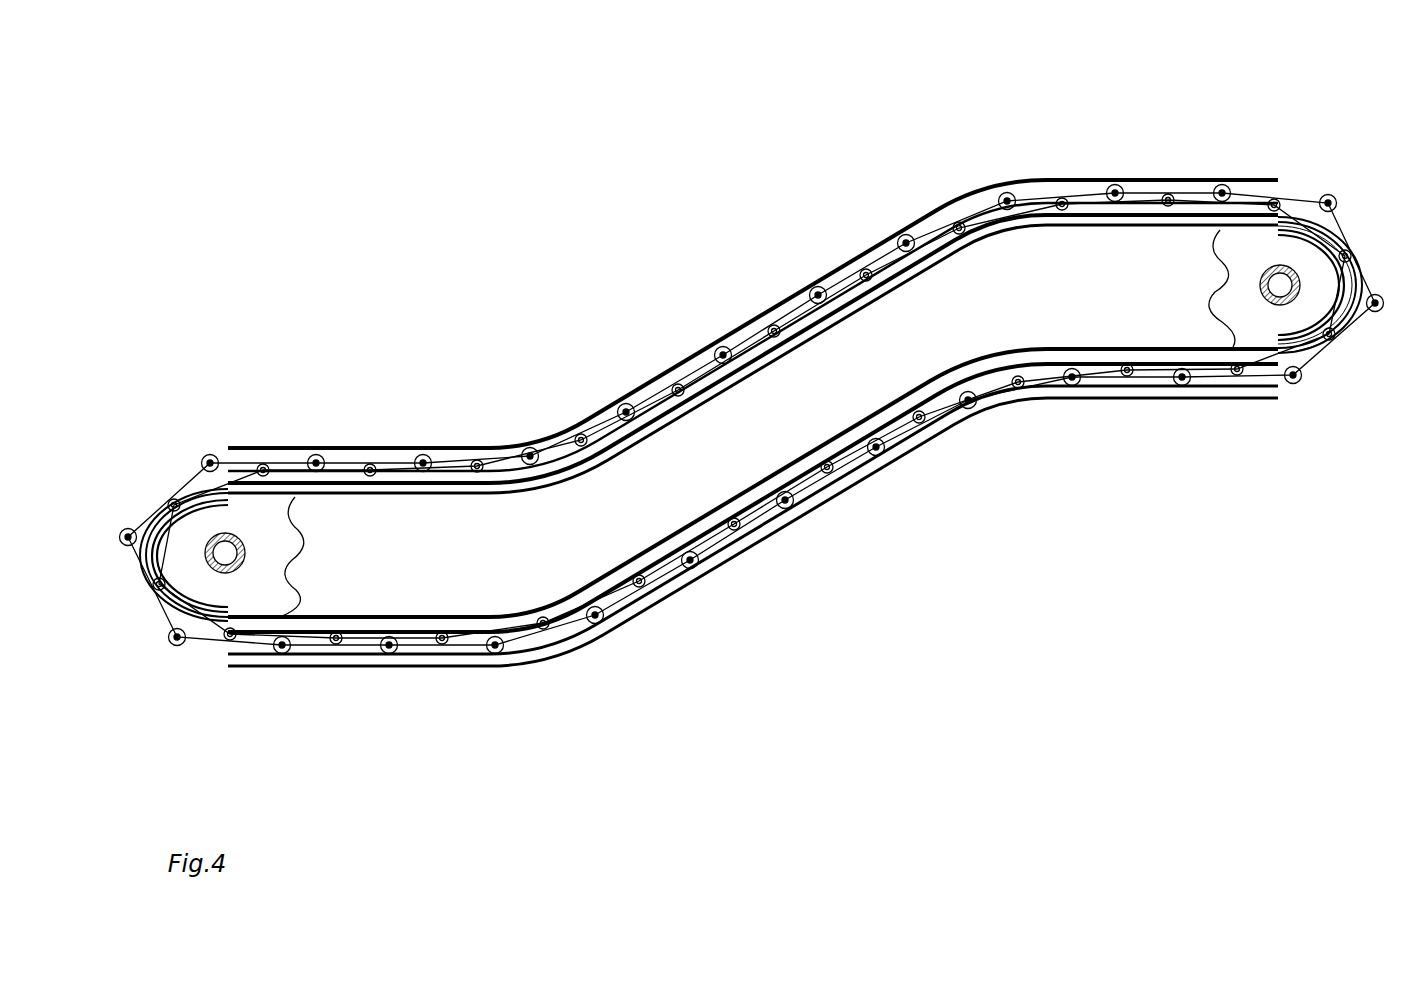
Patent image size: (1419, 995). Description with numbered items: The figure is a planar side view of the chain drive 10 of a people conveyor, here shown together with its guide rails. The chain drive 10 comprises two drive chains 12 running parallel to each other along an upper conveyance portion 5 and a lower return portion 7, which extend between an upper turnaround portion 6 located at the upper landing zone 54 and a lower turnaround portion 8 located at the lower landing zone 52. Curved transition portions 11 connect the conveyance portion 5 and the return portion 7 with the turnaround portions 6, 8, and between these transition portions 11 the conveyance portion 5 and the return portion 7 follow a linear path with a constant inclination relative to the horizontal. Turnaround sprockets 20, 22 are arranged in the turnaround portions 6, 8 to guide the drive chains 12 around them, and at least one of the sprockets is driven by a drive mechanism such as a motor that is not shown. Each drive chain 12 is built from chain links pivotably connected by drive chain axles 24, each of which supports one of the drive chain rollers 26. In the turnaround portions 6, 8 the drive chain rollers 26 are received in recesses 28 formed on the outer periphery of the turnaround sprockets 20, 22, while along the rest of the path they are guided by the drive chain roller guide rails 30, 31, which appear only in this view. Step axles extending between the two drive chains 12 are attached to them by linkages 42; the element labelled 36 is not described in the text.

The conveyance portion 5 is at (838, 537).
The upper turnaround portion 6 is at (1372, 185).
The return portion 7 is at (755, 285).
The lower turnaround portion 8 is at (118, 470).
The chain drive 10 is at (545, 190).
The curved transition portions 11 is at (998, 165).
The drive chains 12 is at (1337, 383).
The turnaround sprocket 20 is at (290, 577).
The turnaround sprocket 22 is at (1258, 325).
The drive chain axles 24 is at (1365, 245).
The drive chain rollers 26 is at (1310, 183).
The recesses 28 is at (320, 548).
The drive chain roller guide rail 30 is at (1150, 208).
The drive chain roller guide rail 31 is at (1178, 185).
The guide curve 36 is at (212, 498).
The linkages 42 is at (478, 622).
The lower landing zone 52 is at (265, 410).
The upper landing zone 54 is at (1283, 97).